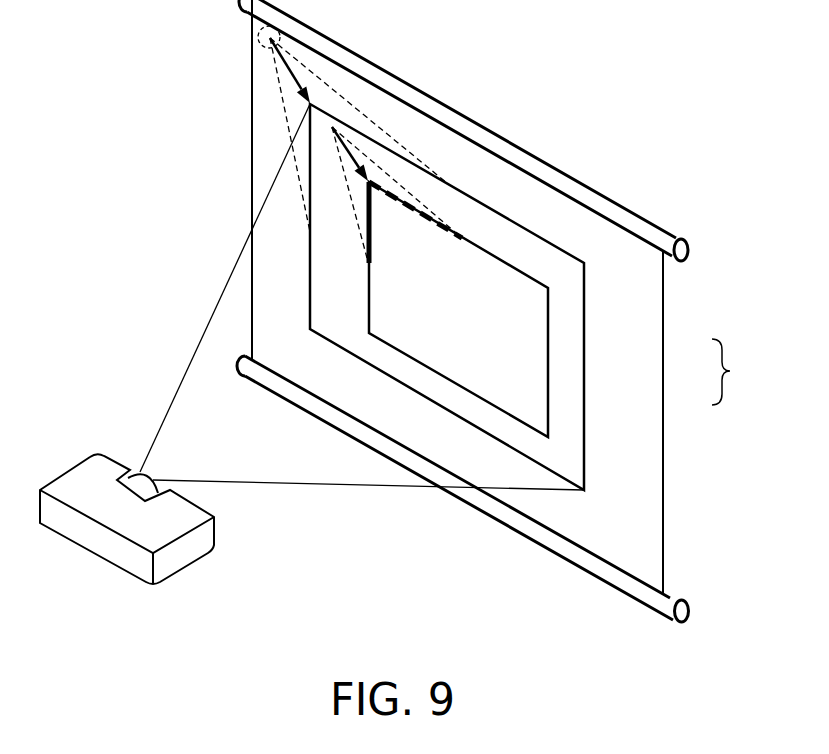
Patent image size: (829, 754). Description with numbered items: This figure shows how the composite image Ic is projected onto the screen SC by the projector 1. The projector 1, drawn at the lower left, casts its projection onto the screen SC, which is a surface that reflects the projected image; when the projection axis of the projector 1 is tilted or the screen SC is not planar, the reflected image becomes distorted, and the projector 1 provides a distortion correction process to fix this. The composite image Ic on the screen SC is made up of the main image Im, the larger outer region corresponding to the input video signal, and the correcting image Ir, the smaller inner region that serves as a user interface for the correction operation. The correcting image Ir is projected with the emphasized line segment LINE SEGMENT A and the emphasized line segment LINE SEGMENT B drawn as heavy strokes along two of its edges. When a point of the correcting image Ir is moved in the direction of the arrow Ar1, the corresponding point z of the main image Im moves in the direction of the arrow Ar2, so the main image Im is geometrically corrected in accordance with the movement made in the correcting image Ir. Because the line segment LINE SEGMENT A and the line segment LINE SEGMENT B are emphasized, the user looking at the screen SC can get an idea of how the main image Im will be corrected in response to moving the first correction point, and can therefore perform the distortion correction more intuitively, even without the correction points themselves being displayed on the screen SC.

The projector 1 is at (74, 445).
The screen SC is at (438, 116).
The main image Im is at (560, 350).
The correcting image Ir is at (523, 395).
The composite image Ic is at (734, 372).
The point z of the main image z is at (266, 48).
The arrow Ar1 is at (347, 155).
The arrow Ar2 is at (291, 73).
The line segment A LINE SEGMENT A is at (366, 230).
The line segment B LINE SEGMENT B is at (425, 212).